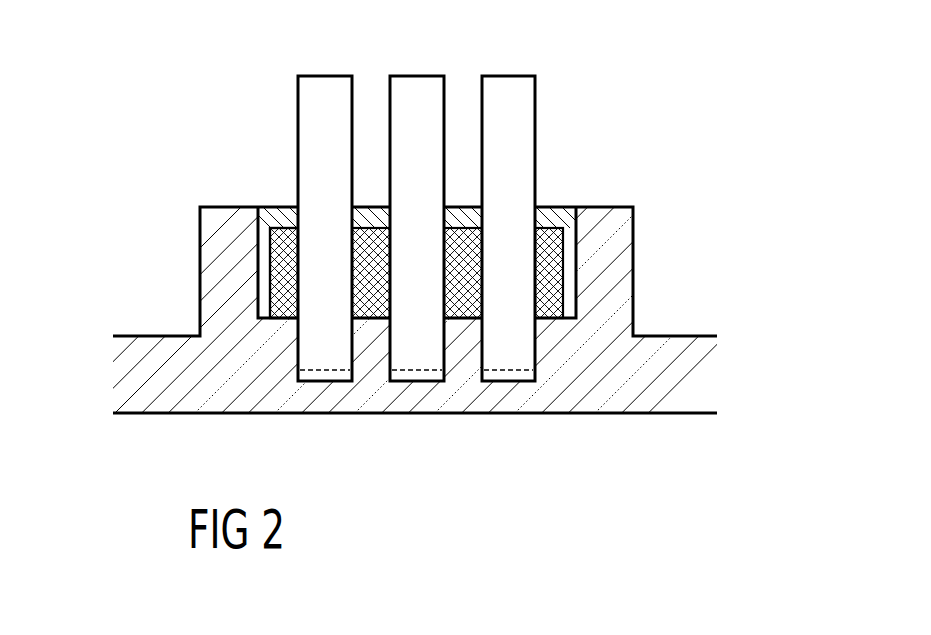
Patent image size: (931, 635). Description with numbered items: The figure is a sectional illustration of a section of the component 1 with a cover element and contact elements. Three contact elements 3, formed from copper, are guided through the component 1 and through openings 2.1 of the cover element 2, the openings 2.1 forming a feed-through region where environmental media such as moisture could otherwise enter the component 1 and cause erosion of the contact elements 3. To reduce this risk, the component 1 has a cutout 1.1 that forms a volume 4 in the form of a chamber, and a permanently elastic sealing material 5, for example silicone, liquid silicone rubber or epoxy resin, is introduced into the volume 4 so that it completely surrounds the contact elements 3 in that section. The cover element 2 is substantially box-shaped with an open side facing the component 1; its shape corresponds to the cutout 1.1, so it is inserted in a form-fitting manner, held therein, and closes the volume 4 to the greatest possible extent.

The component 1 is at (620, 313).
The cutout 1.1 is at (268, 292).
The cover element 2 is at (588, 216).
The openings 2.1 is at (390, 207).
The contact elements 3 is at (318, 100).
The volume 4 is at (563, 267).
The sealing material 5 is at (277, 243).